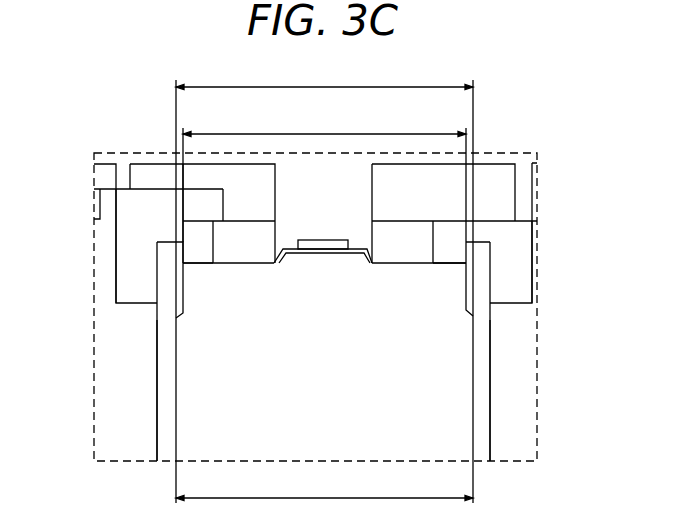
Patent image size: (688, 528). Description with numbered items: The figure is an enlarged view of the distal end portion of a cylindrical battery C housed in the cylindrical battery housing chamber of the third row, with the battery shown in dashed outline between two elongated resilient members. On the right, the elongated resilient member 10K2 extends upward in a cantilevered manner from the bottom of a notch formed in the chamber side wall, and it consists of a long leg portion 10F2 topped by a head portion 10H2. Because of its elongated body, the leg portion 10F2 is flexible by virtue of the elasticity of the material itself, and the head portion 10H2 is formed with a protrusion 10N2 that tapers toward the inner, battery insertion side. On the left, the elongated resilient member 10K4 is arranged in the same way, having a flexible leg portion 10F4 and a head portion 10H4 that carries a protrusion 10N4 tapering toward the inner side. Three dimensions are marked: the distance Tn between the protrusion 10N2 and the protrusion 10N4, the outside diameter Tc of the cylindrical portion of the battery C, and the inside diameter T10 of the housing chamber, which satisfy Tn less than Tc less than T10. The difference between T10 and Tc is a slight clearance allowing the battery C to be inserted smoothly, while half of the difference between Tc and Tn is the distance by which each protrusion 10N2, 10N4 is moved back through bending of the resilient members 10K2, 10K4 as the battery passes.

The elongated resilient member 10K4 is at (165, 243).
The elongated resilient member 10K2 is at (480, 243).
The head portion 10H4 is at (163, 283).
The head portion 10H2 is at (482, 272).
The protrusion 10N4 is at (183, 272).
The protrusion 10N2 is at (463, 272).
The leg portion 10F4 is at (163, 432).
The leg portion 10F2 is at (482, 433).
The cylindrical battery C is at (437, 360).
The outside diameter of the cylindrical portion of the cylindrical battery Tc is at (324, 76).
The distance between the protrusions Tn is at (324, 176).
The inside diameter of the cylindrical battery housing chamber T10 is at (324, 487).